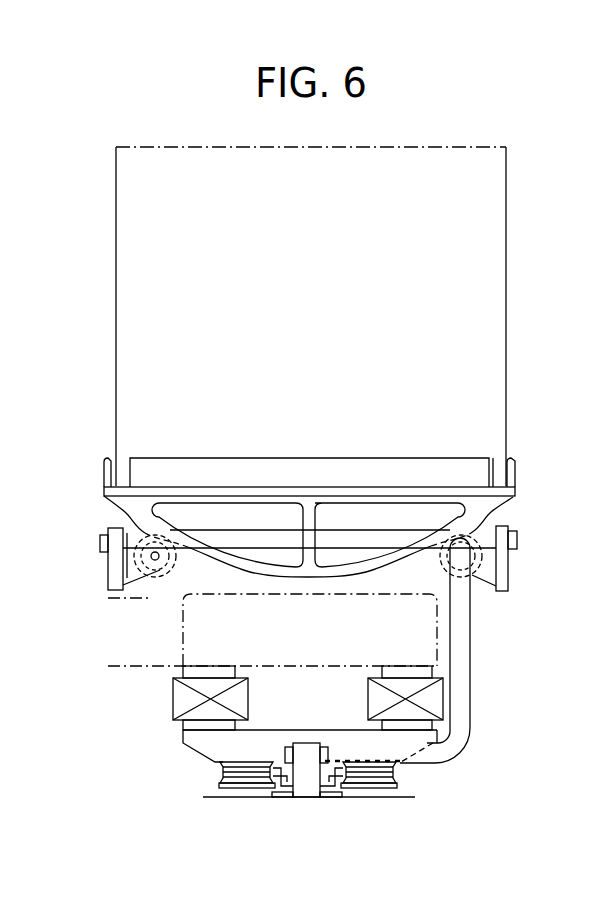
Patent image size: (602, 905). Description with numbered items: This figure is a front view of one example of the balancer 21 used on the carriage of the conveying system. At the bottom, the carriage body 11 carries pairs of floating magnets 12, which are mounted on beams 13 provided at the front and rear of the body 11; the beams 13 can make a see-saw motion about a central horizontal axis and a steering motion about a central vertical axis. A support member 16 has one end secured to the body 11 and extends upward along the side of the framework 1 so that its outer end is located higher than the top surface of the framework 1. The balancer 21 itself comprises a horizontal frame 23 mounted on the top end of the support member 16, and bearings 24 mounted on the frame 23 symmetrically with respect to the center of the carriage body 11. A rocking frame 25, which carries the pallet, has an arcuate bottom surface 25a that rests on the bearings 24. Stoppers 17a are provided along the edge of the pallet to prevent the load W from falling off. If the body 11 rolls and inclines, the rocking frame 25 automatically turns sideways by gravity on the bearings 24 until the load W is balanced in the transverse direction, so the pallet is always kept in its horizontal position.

The load W is at (420, 152).
The stoppers 17a is at (517, 466).
The rocking frame 25 is at (488, 507).
The arcuate bottom surface 25a is at (200, 558).
The horizontal frame 23 is at (145, 533).
The bearings 24 is at (123, 585).
The balancer 21 is at (540, 538).
The support member 16 is at (460, 731).
The framework 1 is at (197, 650).
The floating magnets 12 is at (180, 708).
The beams 13 is at (213, 743).
The body 11 is at (313, 808).